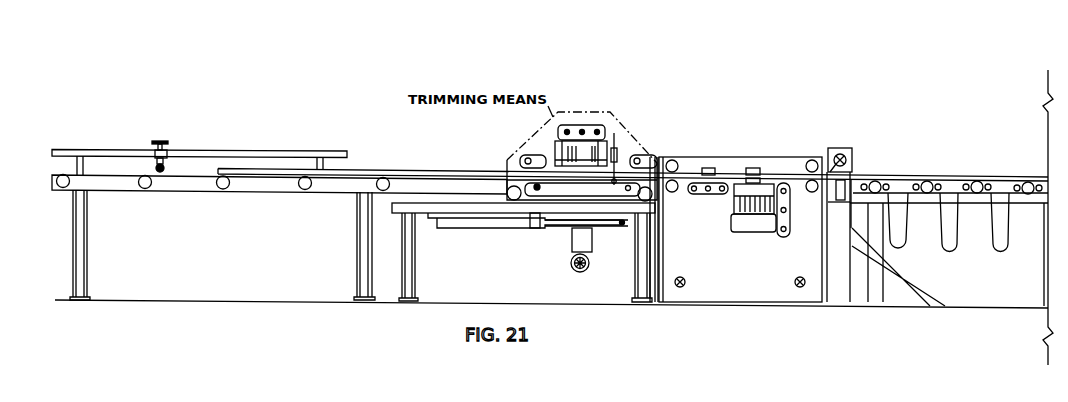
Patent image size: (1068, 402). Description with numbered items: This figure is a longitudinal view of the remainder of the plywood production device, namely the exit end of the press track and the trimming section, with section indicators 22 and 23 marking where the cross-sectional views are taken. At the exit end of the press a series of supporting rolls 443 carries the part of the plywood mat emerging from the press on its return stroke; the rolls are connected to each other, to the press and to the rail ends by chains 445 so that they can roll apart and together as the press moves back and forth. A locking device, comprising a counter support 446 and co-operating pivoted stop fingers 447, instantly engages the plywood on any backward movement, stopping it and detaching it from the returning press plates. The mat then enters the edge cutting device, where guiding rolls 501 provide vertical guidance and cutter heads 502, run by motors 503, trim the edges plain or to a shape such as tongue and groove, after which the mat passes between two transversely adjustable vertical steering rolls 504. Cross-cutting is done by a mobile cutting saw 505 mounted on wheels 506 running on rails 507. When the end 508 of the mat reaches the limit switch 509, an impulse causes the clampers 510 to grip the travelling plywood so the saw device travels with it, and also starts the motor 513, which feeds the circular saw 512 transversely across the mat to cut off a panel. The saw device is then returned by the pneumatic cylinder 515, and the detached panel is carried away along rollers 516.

The rollers 516 is at (67, 175).
The limit switch 509 is at (165, 150).
The end of the plywood mat 508 is at (220, 168).
The rails 507 is at (468, 207).
The wheels 506 is at (510, 191).
The clampers 510 is at (535, 161).
The mobile cutting saw 505 is at (552, 120).
The circular saw 512 is at (593, 128).
The pneumatic cylinder 515 is at (473, 225).
The motor 513 is at (567, 265).
The guiding rolls 501 is at (670, 182).
The vertical steering rolls 504 is at (708, 167).
The cutter heads 502 is at (755, 170).
The motors 503 is at (763, 188).
The pivoted stop fingers 447 is at (851, 152).
The counter support 446 is at (853, 180).
The supporting rolls 443 is at (975, 181).
The chains 445 is at (947, 252).
The section line 22 is at (830, 45).
The section line 23 is at (642, 43).